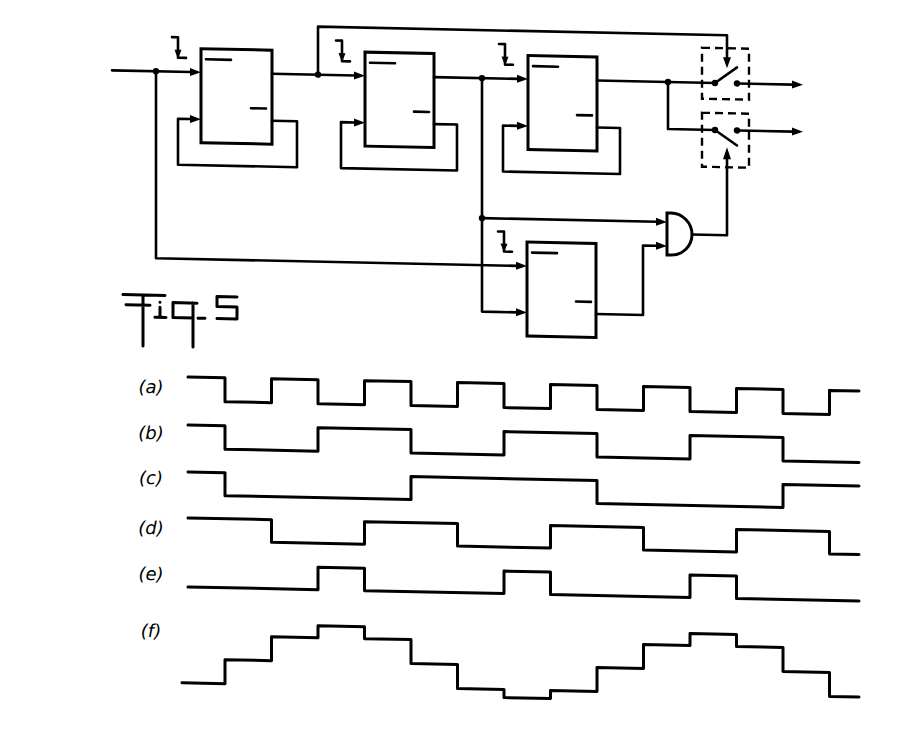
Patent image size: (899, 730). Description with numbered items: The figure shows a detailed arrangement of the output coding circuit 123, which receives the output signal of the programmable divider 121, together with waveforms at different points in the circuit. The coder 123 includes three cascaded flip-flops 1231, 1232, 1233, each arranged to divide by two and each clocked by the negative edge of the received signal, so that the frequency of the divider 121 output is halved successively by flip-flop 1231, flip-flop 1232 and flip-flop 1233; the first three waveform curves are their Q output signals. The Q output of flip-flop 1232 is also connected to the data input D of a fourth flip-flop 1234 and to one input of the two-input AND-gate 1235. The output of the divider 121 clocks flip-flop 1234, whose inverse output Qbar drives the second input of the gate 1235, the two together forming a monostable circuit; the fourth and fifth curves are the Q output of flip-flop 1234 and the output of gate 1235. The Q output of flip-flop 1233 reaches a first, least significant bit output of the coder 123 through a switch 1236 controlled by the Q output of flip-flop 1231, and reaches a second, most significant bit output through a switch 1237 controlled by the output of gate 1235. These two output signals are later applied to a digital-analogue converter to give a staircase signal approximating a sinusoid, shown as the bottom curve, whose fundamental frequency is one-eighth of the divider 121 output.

The programmable divider 121 is at (119, 78).
The output coding circuit 123 is at (366, 193).
The flip-flop 1231 is at (233, 43).
The flip-flop 1232 is at (399, 42).
The flip-flop 1233 is at (561, 42).
The fourth flip-flop 1234 is at (563, 229).
The two input AND-gate 1235 is at (683, 238).
The switch 1236 is at (752, 34).
The switch 1237 is at (740, 152).